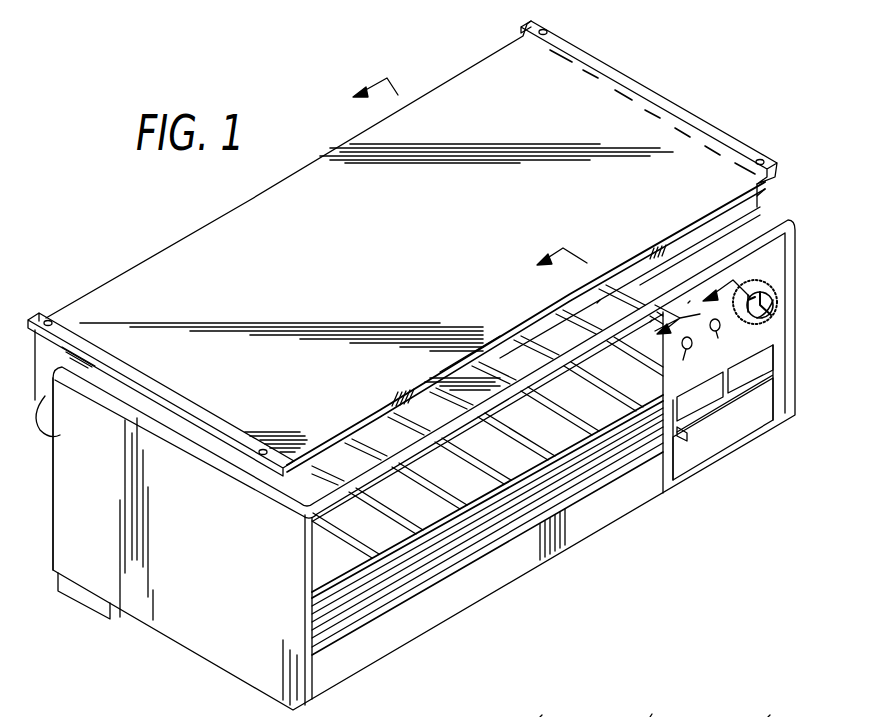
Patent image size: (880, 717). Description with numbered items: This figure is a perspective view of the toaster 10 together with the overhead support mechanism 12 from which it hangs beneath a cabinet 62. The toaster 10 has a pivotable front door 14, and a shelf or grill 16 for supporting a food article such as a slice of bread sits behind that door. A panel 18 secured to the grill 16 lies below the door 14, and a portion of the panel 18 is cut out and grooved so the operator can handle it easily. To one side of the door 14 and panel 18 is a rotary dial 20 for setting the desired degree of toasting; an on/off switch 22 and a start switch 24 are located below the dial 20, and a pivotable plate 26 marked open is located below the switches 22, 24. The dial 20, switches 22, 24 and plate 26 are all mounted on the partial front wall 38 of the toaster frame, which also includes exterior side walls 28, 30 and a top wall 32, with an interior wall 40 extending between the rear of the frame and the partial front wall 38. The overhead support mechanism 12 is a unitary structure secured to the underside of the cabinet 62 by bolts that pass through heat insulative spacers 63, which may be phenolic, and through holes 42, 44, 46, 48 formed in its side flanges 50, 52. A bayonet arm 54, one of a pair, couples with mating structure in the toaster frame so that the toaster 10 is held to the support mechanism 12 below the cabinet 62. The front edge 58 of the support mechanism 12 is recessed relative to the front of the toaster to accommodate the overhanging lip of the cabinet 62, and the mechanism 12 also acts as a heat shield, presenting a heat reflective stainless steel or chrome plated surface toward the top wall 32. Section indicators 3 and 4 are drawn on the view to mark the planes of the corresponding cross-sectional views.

The toaster 10 is at (215, 639).
The overhead support mechanism 12 is at (207, 255).
The front door 14 is at (310, 597).
The grill 16 is at (437, 457).
The panel 18 is at (428, 607).
The rotary dial 20 is at (762, 290).
The on/off switch 22 is at (773, 372).
The start switch 24 is at (686, 420).
The pivotable plate 26 is at (727, 450).
The side wall 28 is at (80, 562).
The side wall 30 is at (752, 203).
The top wall 32 is at (597, 303).
The partial front wall 38 is at (688, 303).
The interior wall 40 is at (650, 322).
The hole 42 is at (264, 446).
The hole 44 is at (50, 320).
The hole 46 is at (548, 30).
The hole 48 is at (763, 158).
The side flange 50 is at (172, 397).
The side flange 52 is at (637, 81).
The bayonet arm 54 is at (69, 391).
The front edge 58 is at (483, 347).
The cabinet 62 is at (650, 716).
The heat insulative spacers 63 is at (768, 712).
The section line 3- 3 is at (552, 181).
The section line 4- 4 is at (605, 300).